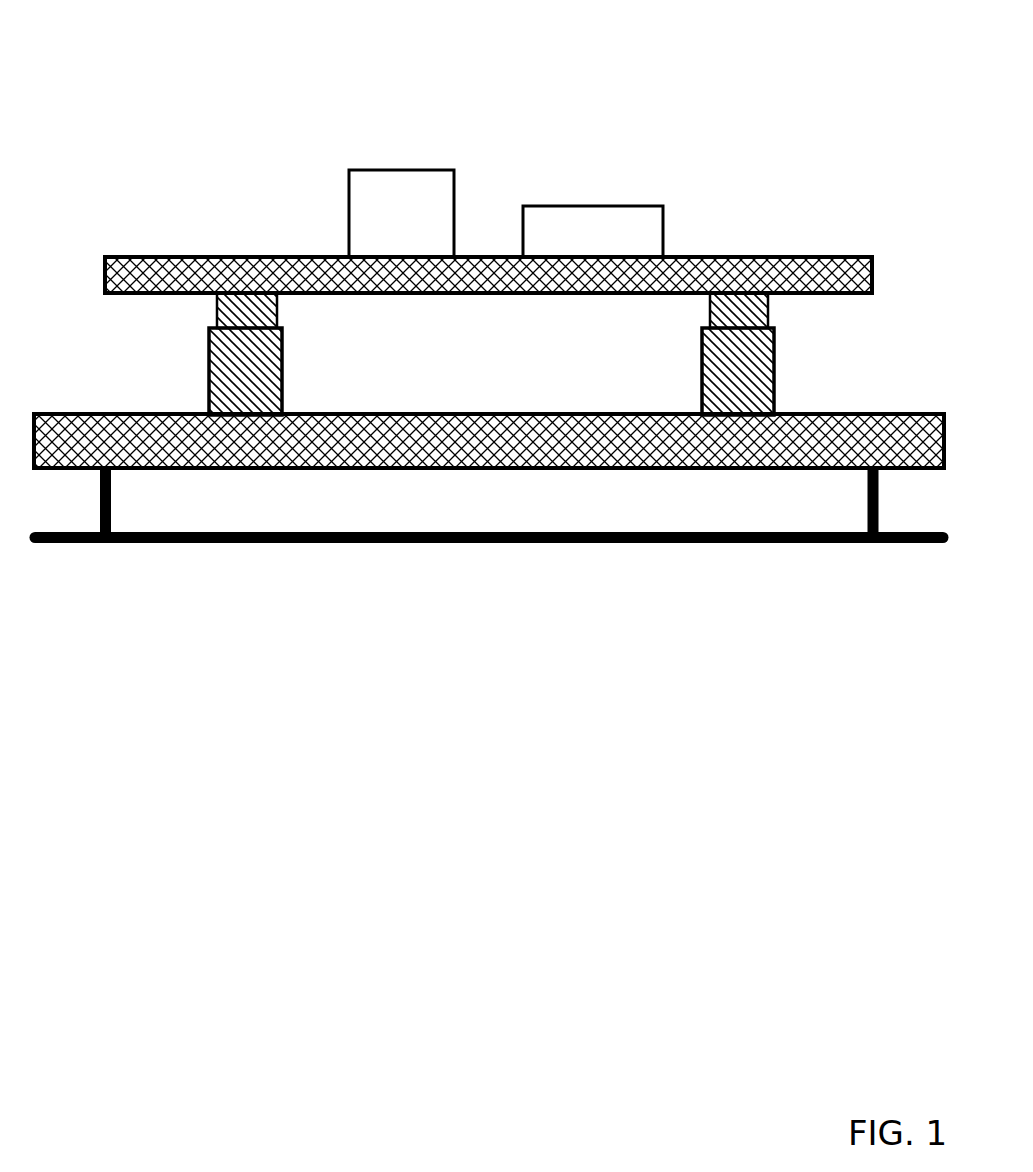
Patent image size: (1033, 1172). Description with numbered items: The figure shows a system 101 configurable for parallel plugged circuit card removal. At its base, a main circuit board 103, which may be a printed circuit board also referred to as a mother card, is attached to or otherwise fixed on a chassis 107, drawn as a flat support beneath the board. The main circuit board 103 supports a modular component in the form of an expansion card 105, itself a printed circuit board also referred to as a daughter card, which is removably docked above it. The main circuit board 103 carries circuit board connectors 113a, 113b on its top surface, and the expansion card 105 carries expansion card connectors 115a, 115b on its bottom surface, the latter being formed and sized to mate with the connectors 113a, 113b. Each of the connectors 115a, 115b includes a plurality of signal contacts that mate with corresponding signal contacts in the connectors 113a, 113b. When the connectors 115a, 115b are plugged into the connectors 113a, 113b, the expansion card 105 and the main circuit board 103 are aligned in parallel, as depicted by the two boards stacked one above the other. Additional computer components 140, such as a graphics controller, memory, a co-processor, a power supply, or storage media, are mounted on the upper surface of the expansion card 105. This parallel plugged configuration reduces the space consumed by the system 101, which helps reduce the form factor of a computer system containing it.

The system 101 is at (172, 29).
The main circuit board 103 is at (500, 468).
The expansion card 105 is at (228, 257).
The chassis 107 is at (268, 543).
The circuit board connector 113a is at (209, 358).
The circuit board connector 113b is at (774, 363).
The expansion card connector 115a is at (217, 312).
The expansion card connector 115b is at (768, 316).
The computer components 140 is at (577, 206).